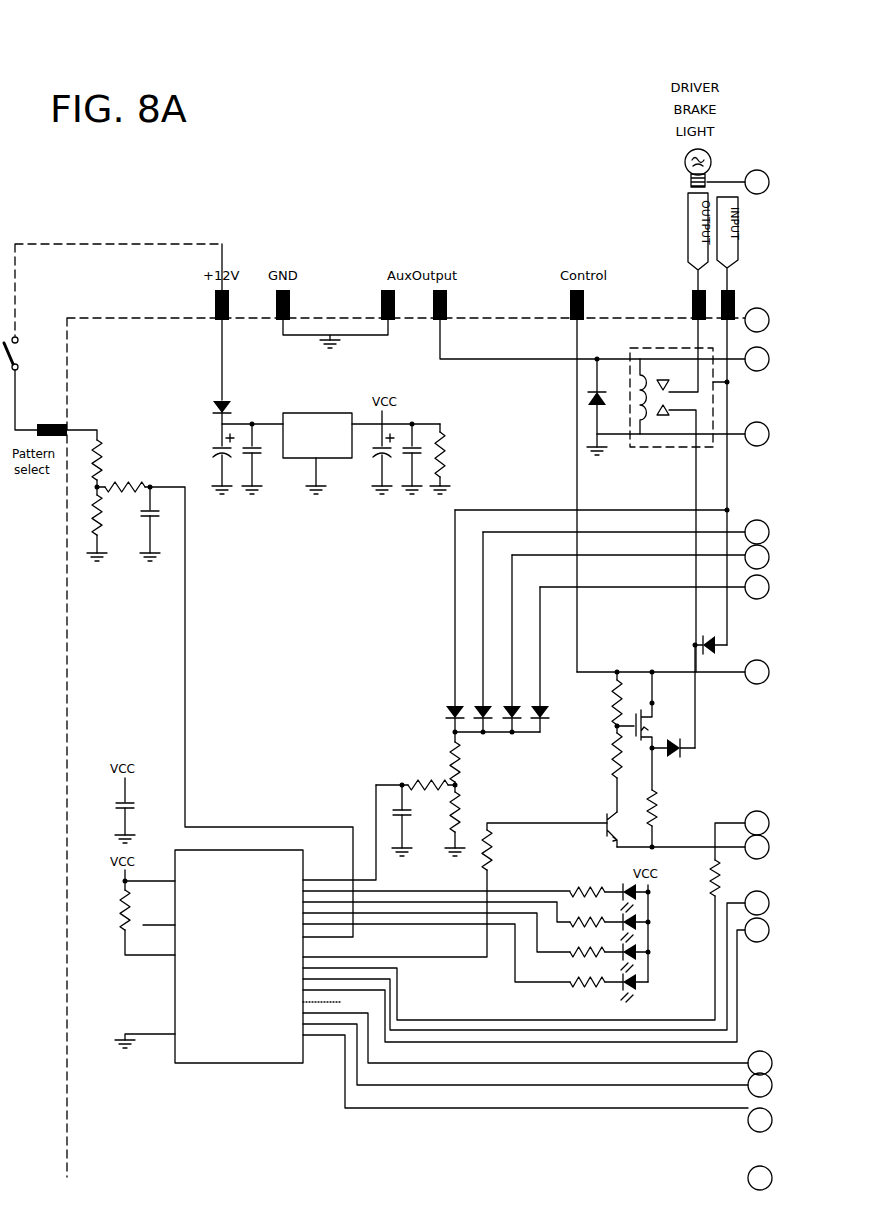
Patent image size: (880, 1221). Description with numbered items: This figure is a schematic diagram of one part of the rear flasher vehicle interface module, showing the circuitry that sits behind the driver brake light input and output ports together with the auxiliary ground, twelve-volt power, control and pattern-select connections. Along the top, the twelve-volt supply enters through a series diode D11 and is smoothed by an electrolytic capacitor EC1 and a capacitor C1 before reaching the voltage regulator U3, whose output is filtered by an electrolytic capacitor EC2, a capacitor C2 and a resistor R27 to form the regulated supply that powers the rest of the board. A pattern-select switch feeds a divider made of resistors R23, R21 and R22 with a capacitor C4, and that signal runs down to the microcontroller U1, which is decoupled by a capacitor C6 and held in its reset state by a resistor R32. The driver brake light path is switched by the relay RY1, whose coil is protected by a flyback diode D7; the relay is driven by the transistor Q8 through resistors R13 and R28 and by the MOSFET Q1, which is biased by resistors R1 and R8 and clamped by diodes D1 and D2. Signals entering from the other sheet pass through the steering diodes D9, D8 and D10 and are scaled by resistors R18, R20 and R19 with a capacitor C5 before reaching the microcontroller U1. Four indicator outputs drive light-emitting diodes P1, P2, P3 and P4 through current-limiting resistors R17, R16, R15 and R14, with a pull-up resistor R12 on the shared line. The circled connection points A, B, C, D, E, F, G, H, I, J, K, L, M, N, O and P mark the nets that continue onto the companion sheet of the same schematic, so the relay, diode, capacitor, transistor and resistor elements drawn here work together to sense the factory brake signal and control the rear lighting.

The diode D11 is at (349, 488).
The electrolytic capacitor EC1 is at (212, 464).
The capacitor C1 is at (258, 459).
The voltage regulator U3 is at (315, 443).
The electrolytic capacitor EC2 is at (370, 452).
The capacitor C2 is at (418, 459).
The resistor R27 is at (453, 459).
The resistor R23 is at (111, 463).
The resistor R21 is at (123, 497).
The resistor R22 is at (108, 524).
The capacitor C4 is at (157, 524).
The diode D7 is at (604, 407).
The relay RY1 is at (680, 510).
The diode D9 is at (448, 621).
The diode D8 is at (477, 632).
The diode D10 is at (551, 659).
The resistor R18 is at (469, 758).
The resistor R20 is at (415, 777).
The resistor R19 is at (467, 820).
The capacitor C5 is at (410, 820).
The diode D1 is at (711, 635).
The resistor R1 is at (609, 699).
The resistor R8 is at (609, 769).
The MOSFET transistor Q1 is at (655, 710).
The diode D2 is at (677, 756).
The resistor R28 is at (666, 797).
The transistor Q8 is at (623, 829).
The resistor R13 is at (455, 890).
The resistor R12 is at (524, 921).
The resistor R17 is at (463, 884).
The resistor R16 is at (463, 914).
The resistor R15 is at (463, 935).
The resistor R14 is at (463, 955).
The LED P1 is at (645, 898).
The LED P2 is at (645, 928).
The LED P3 is at (645, 958).
The LED P4 is at (645, 988).
The microcontroller U1 is at (209, 948).
The resistor R32 is at (133, 922).
The capacitors C6,C5 C6 is at (142, 810).
The connection point A is at (757, 182).
The connection point B is at (757, 320).
The connection point C is at (757, 359).
The connection point D is at (757, 434).
The connection point E is at (757, 532).
The connection point F is at (757, 557).
The connection point G is at (757, 587).
The connection point H is at (757, 672).
The connection point I is at (757, 823).
The connection point J is at (757, 847).
The connection point K is at (757, 903).
The connection point L is at (757, 930).
The connection point M is at (760, 1063).
The connection point N is at (760, 1085).
The connection point O is at (760, 1120).
The connection point P is at (760, 1178).